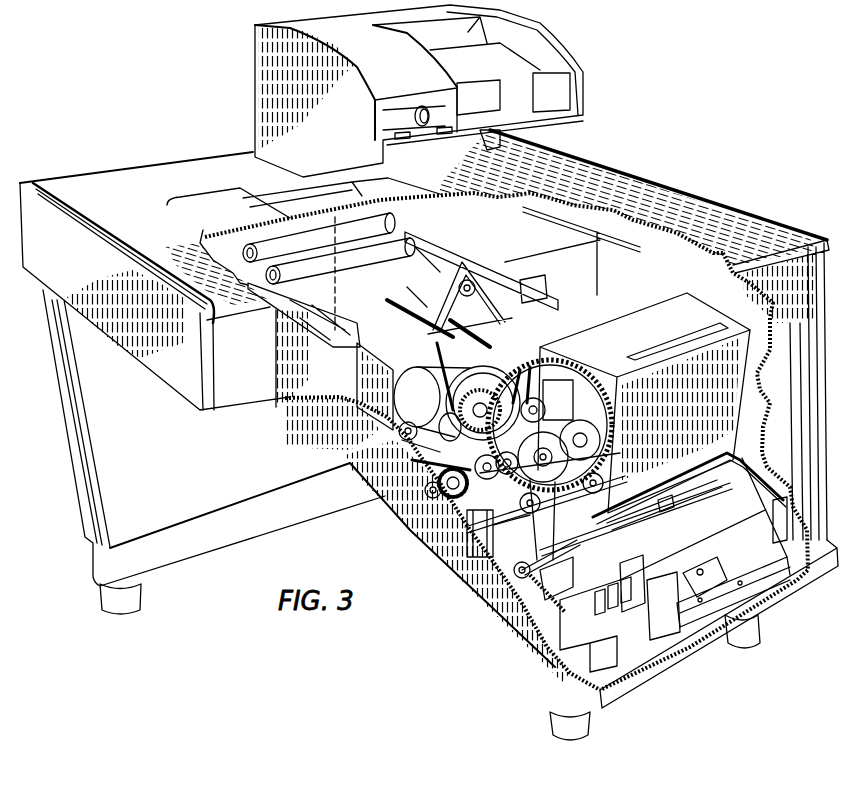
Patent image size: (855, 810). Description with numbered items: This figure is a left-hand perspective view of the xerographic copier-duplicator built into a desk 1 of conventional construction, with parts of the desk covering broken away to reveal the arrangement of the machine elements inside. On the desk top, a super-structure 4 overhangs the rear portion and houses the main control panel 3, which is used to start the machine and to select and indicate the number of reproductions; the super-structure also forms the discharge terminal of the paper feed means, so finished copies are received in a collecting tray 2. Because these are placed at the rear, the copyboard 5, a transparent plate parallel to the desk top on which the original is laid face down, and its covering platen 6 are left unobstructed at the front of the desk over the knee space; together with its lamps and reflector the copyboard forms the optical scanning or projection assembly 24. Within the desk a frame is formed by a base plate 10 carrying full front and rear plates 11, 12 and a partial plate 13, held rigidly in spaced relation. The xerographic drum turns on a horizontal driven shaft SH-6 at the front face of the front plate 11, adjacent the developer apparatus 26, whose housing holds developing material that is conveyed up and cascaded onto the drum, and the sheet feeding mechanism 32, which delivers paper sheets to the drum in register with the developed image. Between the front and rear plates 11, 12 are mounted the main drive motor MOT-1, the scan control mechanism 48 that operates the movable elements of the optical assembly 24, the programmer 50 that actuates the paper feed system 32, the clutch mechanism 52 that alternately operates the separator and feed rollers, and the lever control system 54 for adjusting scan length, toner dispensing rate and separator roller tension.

The desk 1 is at (664, 177).
The collecting tray 2 is at (549, 73).
The main control panel 3 is at (378, 120).
The super-structure 4 is at (256, 88).
The copyboard 5 is at (385, 215).
The platen 6 is at (287, 203).
The base plate 10 is at (787, 529).
The front plate 11 is at (594, 521).
The rear plate 12 is at (548, 593).
The partial plate 13 is at (788, 511).
The optical scanning or projection assembly 24 is at (488, 239).
The developer apparatus 26 is at (692, 426).
The sheet feeding mechanism 32 is at (733, 487).
The scan control mechanism 48 is at (400, 434).
The programmer 50 is at (448, 500).
The clutch mechanism 52 is at (508, 534).
The lever control system 54 is at (625, 628).
The main drive motor MOT-1 is at (365, 405).
The horizontal driven shaft SH-6 is at (410, 460).